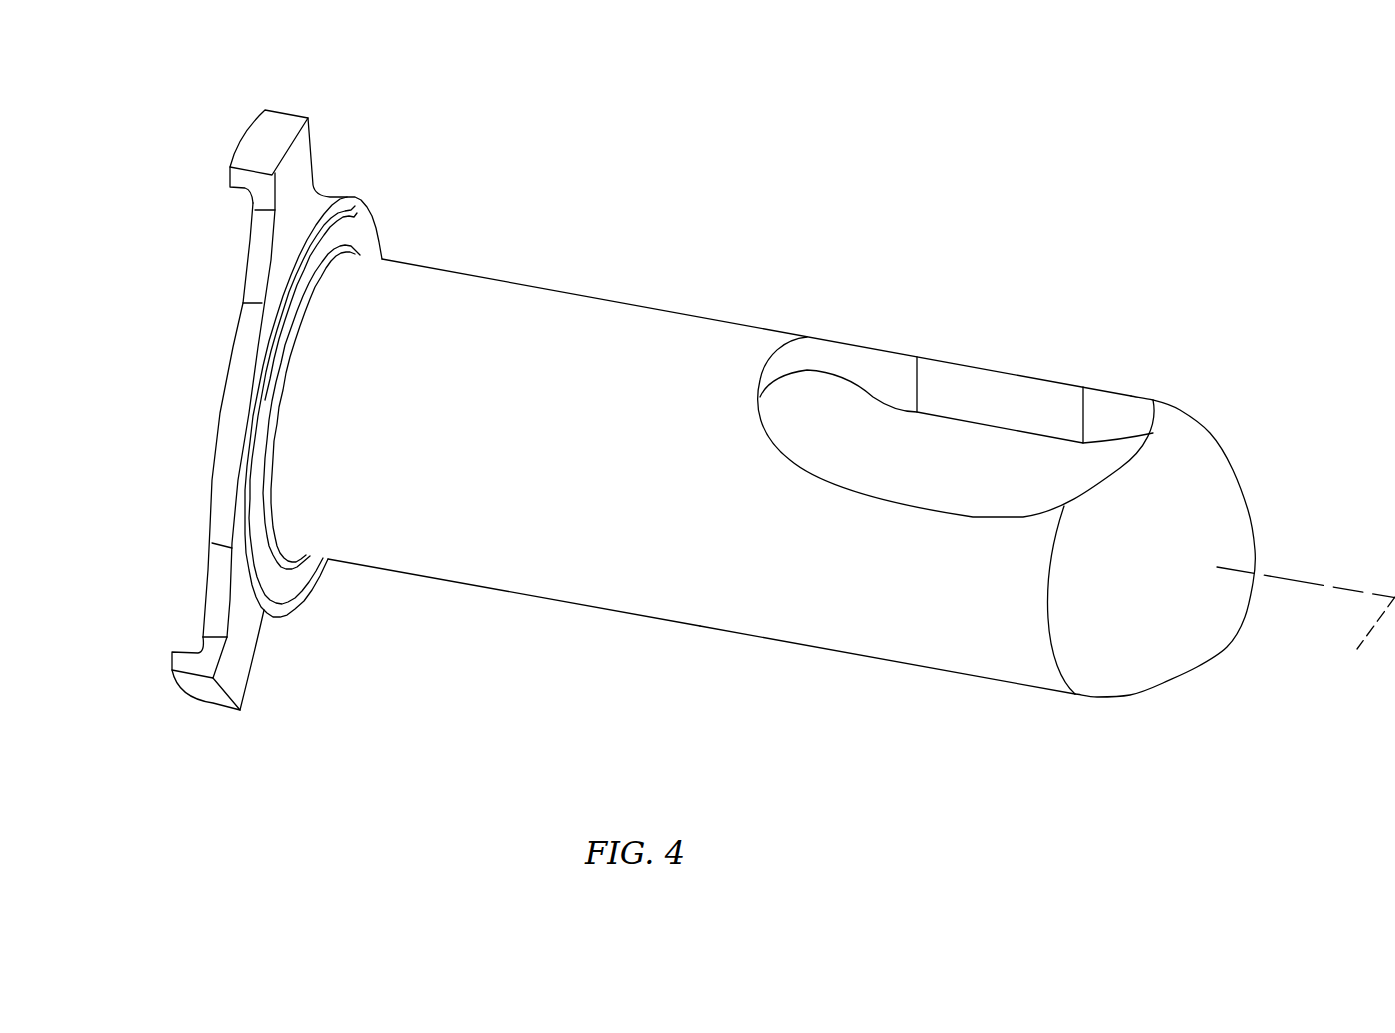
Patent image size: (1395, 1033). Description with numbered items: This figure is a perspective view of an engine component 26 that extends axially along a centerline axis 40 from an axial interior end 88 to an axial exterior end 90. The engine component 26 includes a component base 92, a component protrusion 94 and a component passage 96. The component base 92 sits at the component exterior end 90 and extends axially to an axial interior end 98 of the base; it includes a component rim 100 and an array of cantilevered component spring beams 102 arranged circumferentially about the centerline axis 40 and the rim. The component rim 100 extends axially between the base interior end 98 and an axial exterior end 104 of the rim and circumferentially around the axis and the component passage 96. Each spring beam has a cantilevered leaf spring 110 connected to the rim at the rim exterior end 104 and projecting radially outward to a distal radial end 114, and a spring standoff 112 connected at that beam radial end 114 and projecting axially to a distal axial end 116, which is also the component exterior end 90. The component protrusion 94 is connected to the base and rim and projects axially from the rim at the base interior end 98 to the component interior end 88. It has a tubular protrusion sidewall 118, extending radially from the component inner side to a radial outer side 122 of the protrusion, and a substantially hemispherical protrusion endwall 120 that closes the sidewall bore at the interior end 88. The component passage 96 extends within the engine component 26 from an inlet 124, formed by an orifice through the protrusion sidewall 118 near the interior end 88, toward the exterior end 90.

The engine component 26 is at (815, 233).
The centerline axis 40 is at (1368, 638).
The axial interior end 88 is at (1253, 557).
The axial exterior end 90 is at (214, 417).
The component base 92 is at (355, 188).
The component protrusion 94 is at (600, 283).
The component passage 96 is at (846, 415).
The axial interior end of the component base 98 is at (300, 583).
The component rim 100 is at (379, 219).
The component spring beams 102 is at (243, 417).
The axial exterior end of the component rim 104 is at (210, 517).
The cantilevered leaf spring 110 is at (303, 153).
The spring standoff 112 is at (268, 128).
The distal radial end 114 is at (287, 110).
The distal axial end of the spring standoff 116 is at (242, 145).
The tubular protrusion sidewall 118 is at (710, 630).
The protrusion endwall 120 is at (1188, 648).
The radial outer side of the component protrusion 122 is at (830, 628).
The inlet 124 is at (1005, 400).